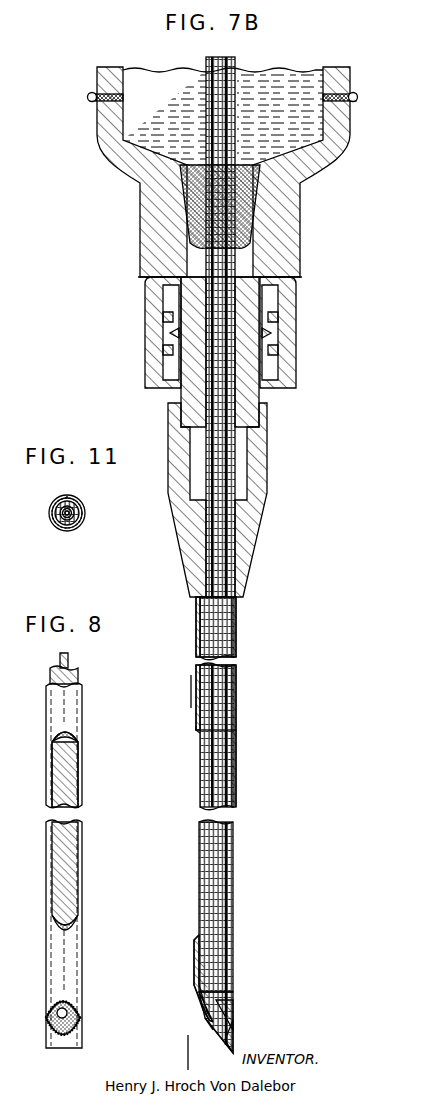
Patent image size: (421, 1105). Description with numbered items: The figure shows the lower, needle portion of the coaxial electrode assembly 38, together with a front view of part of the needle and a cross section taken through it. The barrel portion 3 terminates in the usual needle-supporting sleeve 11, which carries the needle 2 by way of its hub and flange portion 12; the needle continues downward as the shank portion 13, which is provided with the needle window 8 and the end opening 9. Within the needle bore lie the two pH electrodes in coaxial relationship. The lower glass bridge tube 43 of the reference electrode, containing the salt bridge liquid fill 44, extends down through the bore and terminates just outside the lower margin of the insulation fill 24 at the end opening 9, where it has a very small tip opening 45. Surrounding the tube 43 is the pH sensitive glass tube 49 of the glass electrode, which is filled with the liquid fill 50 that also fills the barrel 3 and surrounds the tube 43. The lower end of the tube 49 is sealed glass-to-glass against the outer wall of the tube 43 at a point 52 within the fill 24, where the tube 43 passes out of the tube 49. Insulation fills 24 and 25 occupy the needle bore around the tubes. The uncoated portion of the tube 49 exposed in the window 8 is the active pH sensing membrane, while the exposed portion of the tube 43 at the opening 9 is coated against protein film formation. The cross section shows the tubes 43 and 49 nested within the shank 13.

In FIG. 7B, the needle 2 is at (283, 678).
In FIG. 7B, the barrel portion 3 is at (112, 145).
In FIG. 7B, the needle window 8 is at (182, 696).
In FIG. 11, the needle window 8 is at (66, 497).
In FIG. 8, the needle window 8 is at (46, 776).
In FIG. 7B, the end opening 9 is at (222, 1032).
In FIG. 8, the end opening 9 is at (78, 1020).
In FIG. 7B, the needle-supporting sleeve 11 is at (147, 310).
In FIG. 7B, the hub and flange portion 12 is at (262, 444).
In FIG. 7B, the shank portion 13 is at (238, 692).
In FIG. 11, the shank portion 13 is at (79, 500).
In FIG. 8, the shank portion 13 is at (46, 702).
In FIG. 7B, the insulation fill 24 is at (197, 936).
In FIG. 11, the insulation fill 24 is at (53, 504).
In FIG. 8, the insulation fill 24 is at (60, 918).
In FIG. 7B, the insulation fill 25 is at (197, 731).
In FIG. 8, the insulation fill 25 is at (60, 733).
In FIG. 7B, the coaxial electrode assembly 38 is at (50, 132).
In FIG. 7B, the lower glass bridge tube 43 is at (232, 60).
In FIG. 11, the lower glass bridge tube 43 is at (60, 523).
In FIG. 8, the lower glass bridge tube 43 is at (62, 668).
In FIG. 7B, the salt bridge liquid fill 44 is at (218, 772).
In FIG. 11, the salt bridge liquid fill 44 is at (52, 513).
In FIG. 7B, the tip opening 45 is at (210, 1028).
In FIG. 8, the tip opening 45 is at (52, 1022).
In FIG. 7B, the pH sensitive glass tube 49 is at (206, 62).
In FIG. 11, the pH sensitive glass tube 49 is at (86, 513).
In FIG. 8, the pH sensitive glass tube 49 is at (50, 678).
In FIG. 7B, the liquid fill 50 is at (142, 171).
In FIG. 11, the liquid fill 50 is at (73, 524).
In FIG. 7B, the seal point 52 is at (222, 1001).